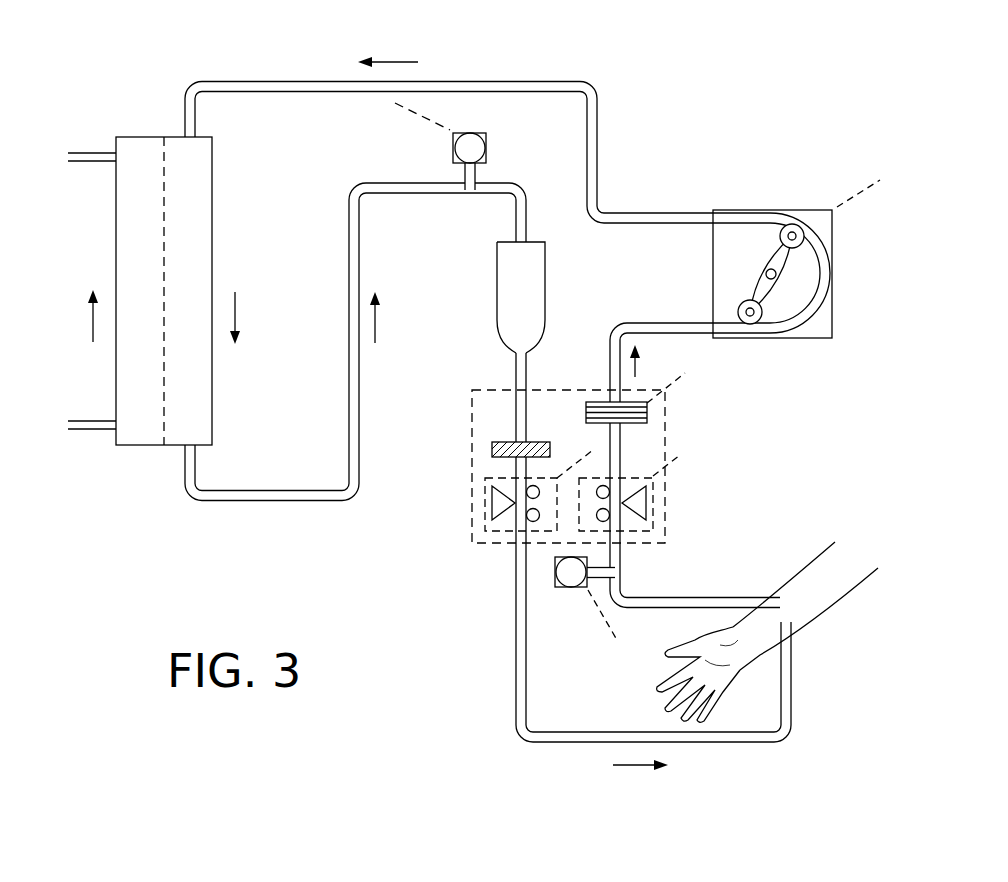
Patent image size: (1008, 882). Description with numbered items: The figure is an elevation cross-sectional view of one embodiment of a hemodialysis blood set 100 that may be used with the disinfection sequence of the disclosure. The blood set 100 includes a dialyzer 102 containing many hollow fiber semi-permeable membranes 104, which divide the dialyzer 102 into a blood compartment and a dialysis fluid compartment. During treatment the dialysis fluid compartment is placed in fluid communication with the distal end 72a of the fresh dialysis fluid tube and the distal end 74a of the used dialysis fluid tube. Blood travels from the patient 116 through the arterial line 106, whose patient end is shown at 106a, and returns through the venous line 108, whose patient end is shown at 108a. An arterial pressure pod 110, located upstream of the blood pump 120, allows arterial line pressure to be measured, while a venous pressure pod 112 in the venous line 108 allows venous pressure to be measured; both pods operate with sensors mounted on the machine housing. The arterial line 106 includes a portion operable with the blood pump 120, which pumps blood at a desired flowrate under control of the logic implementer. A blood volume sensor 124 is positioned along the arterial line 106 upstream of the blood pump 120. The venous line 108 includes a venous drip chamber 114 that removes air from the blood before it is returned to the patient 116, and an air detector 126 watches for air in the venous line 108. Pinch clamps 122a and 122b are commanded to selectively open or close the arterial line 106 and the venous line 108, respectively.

The blood set 100 is at (587, 84).
The dialyzer 102 is at (192, 291).
The hollow fiber semi-permeable membranes 104 is at (164, 387).
The distal end of used dialysis fluid tube 74a is at (95, 153).
The distal end of fresh dialysis fluid tube 72a is at (88, 421).
The arterial line 106 is at (650, 213).
The arterial line patient end 106a is at (702, 598).
The venous line 108 is at (572, 732).
The venous line patient end 108a is at (790, 657).
The arterial pressure pod 110 is at (572, 588).
The venous pressure pod 112 is at (477, 132).
The venous drip chamber 114 is at (497, 287).
The patient 116 is at (827, 567).
The blood pump 120 is at (796, 210).
The pinch clamp 122a is at (653, 505).
The pinch clamp 122b is at (485, 506).
The blood volume sensor 124 is at (648, 414).
The air detector 126 is at (492, 450).